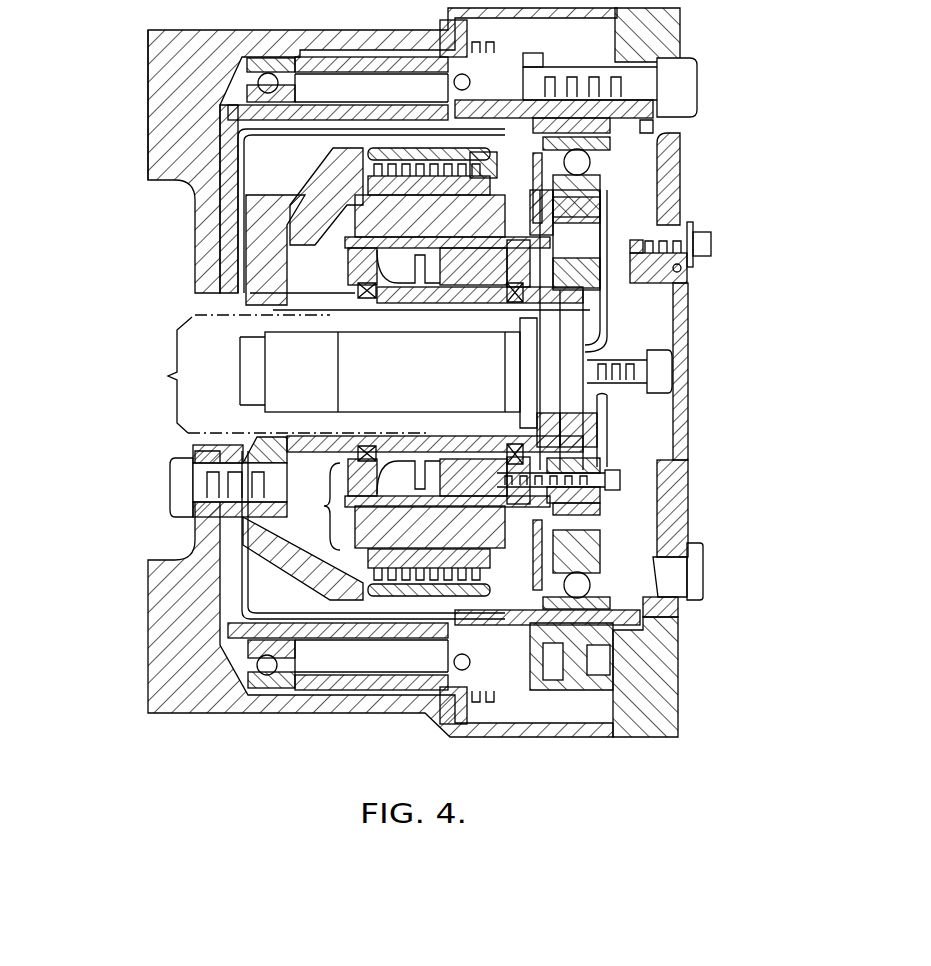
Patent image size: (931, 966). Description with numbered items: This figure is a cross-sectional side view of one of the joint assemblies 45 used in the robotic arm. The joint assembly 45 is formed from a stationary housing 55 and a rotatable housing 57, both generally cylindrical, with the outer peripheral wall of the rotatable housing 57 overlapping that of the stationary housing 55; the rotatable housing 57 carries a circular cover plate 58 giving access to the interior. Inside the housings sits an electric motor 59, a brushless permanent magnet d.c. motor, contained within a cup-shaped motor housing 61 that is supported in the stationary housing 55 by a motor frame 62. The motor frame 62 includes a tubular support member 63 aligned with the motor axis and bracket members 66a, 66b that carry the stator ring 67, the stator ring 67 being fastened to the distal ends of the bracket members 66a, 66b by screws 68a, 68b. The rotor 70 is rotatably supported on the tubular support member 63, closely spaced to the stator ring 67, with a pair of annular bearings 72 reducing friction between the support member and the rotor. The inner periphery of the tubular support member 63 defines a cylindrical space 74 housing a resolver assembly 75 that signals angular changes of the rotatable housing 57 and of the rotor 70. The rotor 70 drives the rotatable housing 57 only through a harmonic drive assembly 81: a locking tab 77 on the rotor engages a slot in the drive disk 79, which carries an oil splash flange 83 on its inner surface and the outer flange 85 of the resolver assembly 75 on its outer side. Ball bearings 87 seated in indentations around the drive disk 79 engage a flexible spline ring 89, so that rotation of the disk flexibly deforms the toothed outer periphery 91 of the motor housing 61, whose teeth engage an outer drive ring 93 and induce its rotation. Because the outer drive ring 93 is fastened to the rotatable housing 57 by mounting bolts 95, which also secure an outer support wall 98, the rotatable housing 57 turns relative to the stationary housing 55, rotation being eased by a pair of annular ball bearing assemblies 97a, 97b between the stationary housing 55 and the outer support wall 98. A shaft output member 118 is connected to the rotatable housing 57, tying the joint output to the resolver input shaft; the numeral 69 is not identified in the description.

The joint assembly 45 is at (135, 72).
The stationary housing 55 is at (165, 148).
The rotatable housing 57 is at (672, 32).
The mounting bolts 95 is at (683, 90).
The outer drive ring 93 is at (586, 100).
The annular ball bearing assembly 97a is at (292, 82).
The annular ball bearing assembly 97b is at (455, 84).
The outer support wall 98 is at (295, 118).
The cup-shaped motor housing 61 is at (325, 137).
The bracket member 66a is at (300, 197).
The motor frame 62 is at (265, 258).
The stator ring 67 is at (448, 155).
The screw 68a is at (510, 158).
The screw 68b is at (480, 538).
The electric motor 59 is at (346, 268).
The annular bearings 72 is at (420, 303).
The locking tab 77 is at (570, 330).
The drive disk 79 is at (584, 277).
The outer periphery of motor housing 91 is at (652, 127).
The flexible spline ring 89 is at (610, 144).
The ball bearings 87 is at (590, 160).
The harmonic drive assembly 81 is at (643, 197).
The circular cover plate 58 is at (688, 303).
The cylindrical space 74 is at (280, 374).
The resolver assembly 75 is at (413, 403).
The shaft output member 118 is at (672, 380).
The outer flange of resolver assembly 85 is at (607, 412).
The oil splash flange 83 is at (510, 590).
The tubular support member 63 is at (486, 450).
The bolt 69 is at (180, 487).
The rotor 70 is at (316, 506).
The bracket member 66b is at (306, 566).